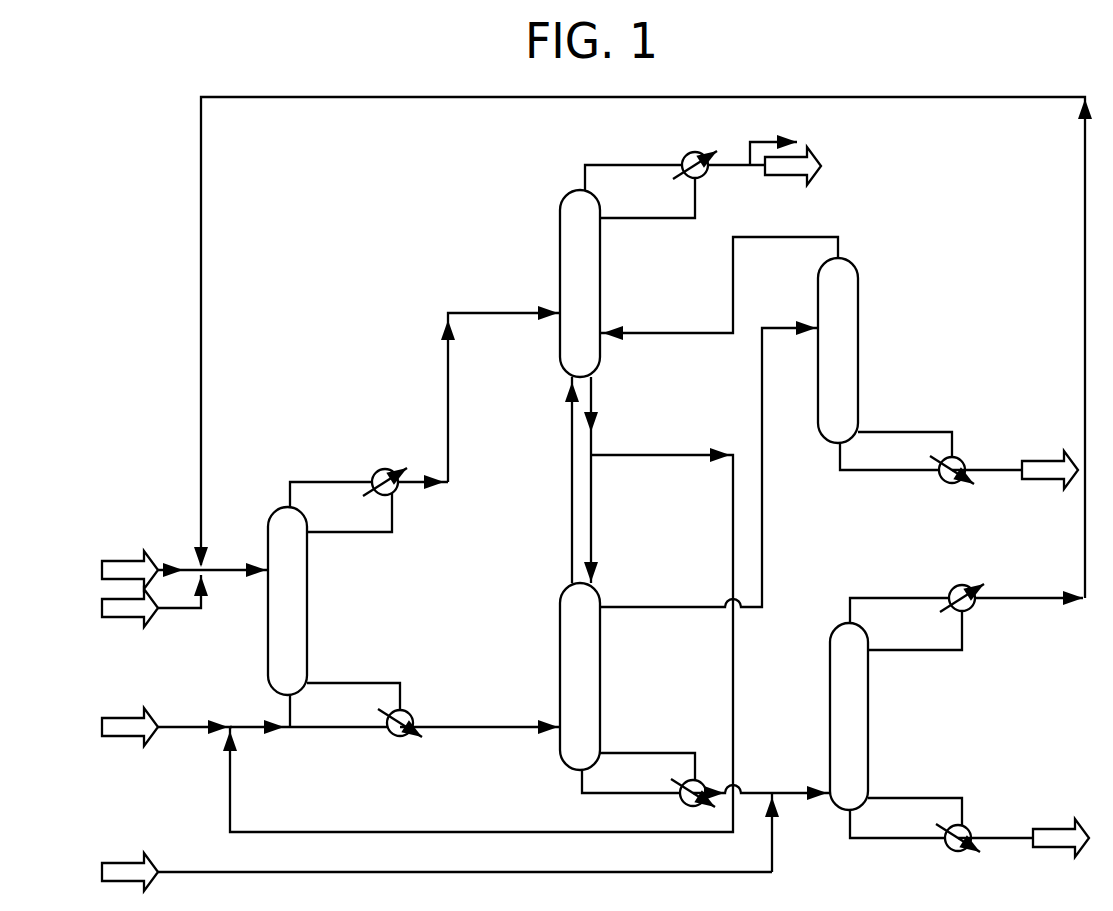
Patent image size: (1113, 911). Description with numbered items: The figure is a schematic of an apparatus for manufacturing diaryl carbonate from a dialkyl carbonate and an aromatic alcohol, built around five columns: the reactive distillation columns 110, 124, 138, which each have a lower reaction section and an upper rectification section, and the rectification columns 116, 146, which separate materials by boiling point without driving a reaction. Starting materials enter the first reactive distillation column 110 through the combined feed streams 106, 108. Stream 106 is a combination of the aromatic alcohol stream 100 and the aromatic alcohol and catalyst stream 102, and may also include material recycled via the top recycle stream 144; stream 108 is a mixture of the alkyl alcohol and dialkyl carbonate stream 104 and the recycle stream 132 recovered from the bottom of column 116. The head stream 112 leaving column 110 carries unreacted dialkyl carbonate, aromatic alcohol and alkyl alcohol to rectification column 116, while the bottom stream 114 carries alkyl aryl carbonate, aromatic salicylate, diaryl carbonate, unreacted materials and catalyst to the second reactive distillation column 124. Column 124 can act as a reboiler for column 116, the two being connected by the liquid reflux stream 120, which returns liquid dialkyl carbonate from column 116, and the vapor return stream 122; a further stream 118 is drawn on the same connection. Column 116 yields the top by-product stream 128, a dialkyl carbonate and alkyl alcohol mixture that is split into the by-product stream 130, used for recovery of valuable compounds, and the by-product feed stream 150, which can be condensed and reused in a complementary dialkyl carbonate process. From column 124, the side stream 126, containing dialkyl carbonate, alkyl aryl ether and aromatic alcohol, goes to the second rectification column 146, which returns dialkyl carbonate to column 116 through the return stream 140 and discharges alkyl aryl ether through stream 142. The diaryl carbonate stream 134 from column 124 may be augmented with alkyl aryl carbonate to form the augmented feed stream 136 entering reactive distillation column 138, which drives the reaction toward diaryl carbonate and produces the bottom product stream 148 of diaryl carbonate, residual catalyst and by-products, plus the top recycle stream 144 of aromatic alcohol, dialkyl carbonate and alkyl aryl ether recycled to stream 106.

The aromatic alcohol stream 100 is at (170, 563).
The aromatic alcohol and transesterification catalyst stream 102 is at (165, 613).
The alkyl alcohol and dialkyl carbonate stream 104 is at (198, 725).
The combined feed stream 106 is at (210, 566).
The combined feed stream 108 is at (243, 730).
The reactive distillation column 110 is at (307, 637).
The head stream 112 is at (447, 397).
The bottom stream 114 is at (517, 723).
The rectification column 116 is at (600, 263).
The stream 118 is at (592, 407).
The liquid reflux stream 120 is at (592, 512).
The vapor return stream 122 is at (570, 475).
The second reactive distillation column 124 is at (600, 672).
The side stream 126 is at (693, 605).
The top by-product stream 128 is at (583, 176).
The by-product stream 130 is at (760, 137).
The recycle stream 132 is at (683, 452).
The diaryl carbonate stream 134 is at (740, 783).
The augmented feed stream 136 is at (783, 797).
The reactive distillation column 138 is at (868, 707).
The dialkyl carbonate return stream 140 is at (832, 237).
The alkyl aryl ether discharge stream 142 is at (987, 467).
The top recycle stream 144 is at (1017, 595).
The second rectification column 146 is at (858, 338).
The bottom product stream 148 is at (998, 830).
The by-product feed stream 150 is at (805, 180).